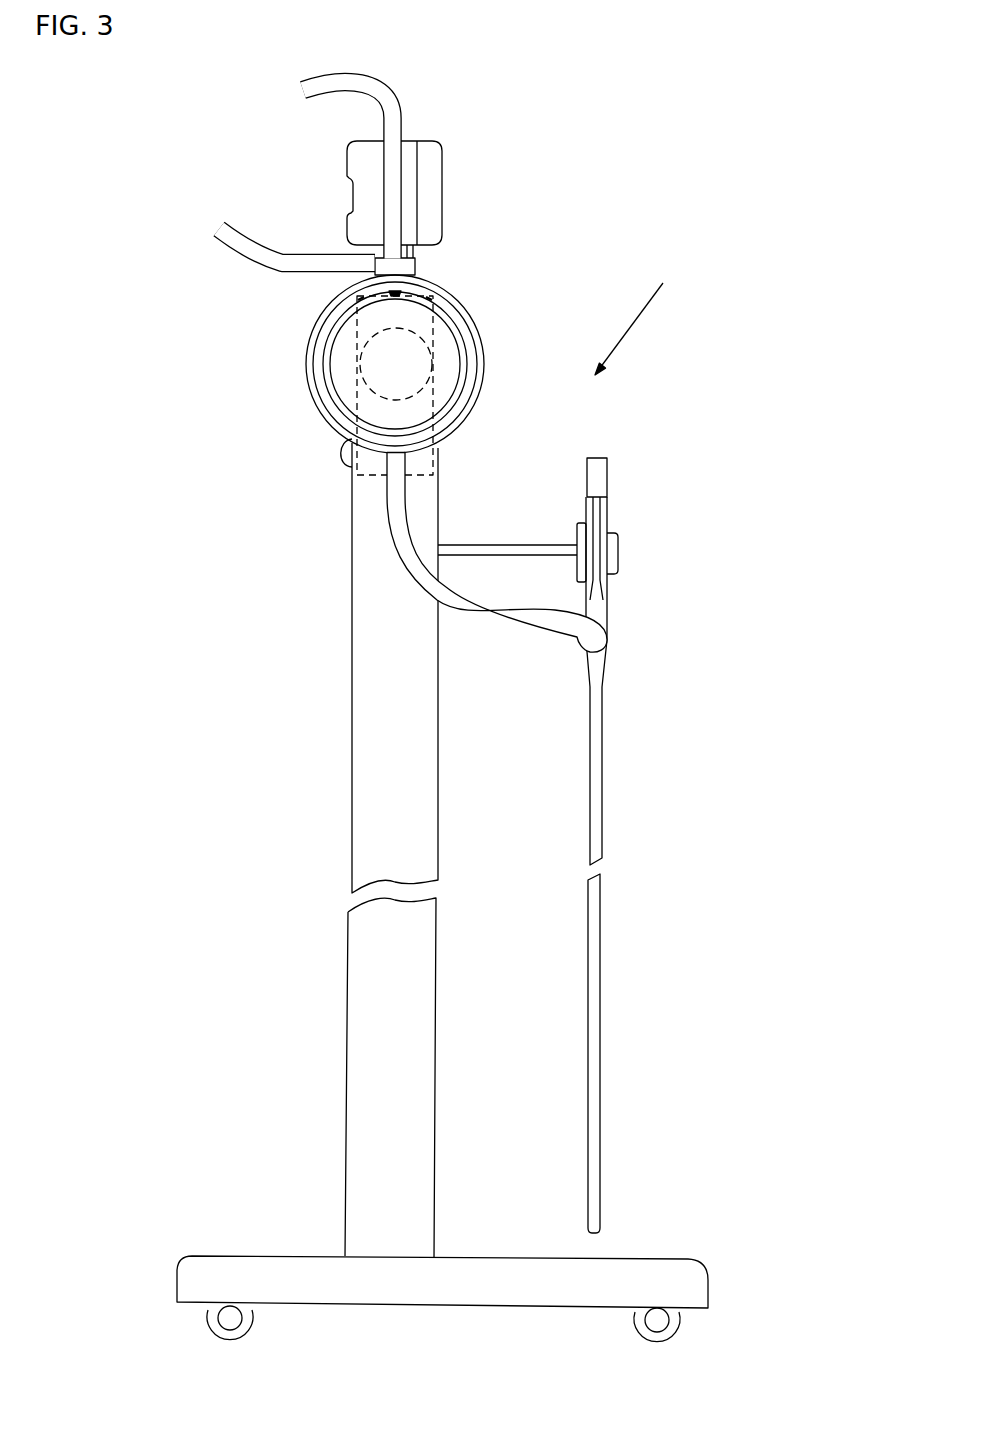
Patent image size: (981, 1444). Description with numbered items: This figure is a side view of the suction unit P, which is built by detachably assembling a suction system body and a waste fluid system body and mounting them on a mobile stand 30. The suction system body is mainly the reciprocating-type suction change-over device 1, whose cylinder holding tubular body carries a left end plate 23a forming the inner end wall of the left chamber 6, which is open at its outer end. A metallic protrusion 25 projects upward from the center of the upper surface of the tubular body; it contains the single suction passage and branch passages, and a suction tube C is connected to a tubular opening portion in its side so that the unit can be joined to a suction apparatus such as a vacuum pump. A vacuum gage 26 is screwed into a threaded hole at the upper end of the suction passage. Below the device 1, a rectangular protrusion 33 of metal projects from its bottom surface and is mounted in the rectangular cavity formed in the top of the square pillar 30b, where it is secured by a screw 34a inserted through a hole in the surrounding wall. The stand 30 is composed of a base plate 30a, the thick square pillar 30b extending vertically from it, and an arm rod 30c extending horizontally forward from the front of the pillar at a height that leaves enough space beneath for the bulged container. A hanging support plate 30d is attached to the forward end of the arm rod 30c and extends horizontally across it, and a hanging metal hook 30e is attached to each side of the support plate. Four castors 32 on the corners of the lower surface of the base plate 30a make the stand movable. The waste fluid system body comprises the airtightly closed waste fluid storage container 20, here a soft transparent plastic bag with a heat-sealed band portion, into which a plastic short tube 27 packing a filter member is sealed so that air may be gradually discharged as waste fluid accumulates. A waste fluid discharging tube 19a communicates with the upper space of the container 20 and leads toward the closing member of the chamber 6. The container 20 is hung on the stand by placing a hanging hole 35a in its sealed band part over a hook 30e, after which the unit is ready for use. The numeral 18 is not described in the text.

The hanger hook (with bag B) 18 is at (400, 93).
The vacuum gage 26 is at (438, 160).
The metallic protrusion 25 is at (410, 263).
The reciprocating-type suction change-over device 1 is at (400, 359).
The left end plate 23a is at (478, 328).
The left chamber 6 is at (450, 361).
The screw 34a is at (343, 452).
The rectangular protrusion 33 is at (350, 480).
The stand 30 is at (342, 718).
The square pillar 30b is at (405, 995).
The base plate 30a is at (505, 1272).
The castors 32 is at (250, 1320).
The arm rod 30c is at (497, 546).
The hanging support plate 30d is at (577, 533).
The hanging metal hook 30e is at (618, 548).
The plastic short tube 27 is at (599, 468).
The left hanging hole 35a is at (610, 590).
The left waste fluid discharging tube 19a is at (533, 620).
The waste fluid storage container 20 is at (600, 764).
The suction tube C is at (250, 240).
The suction unit P is at (636, 315).